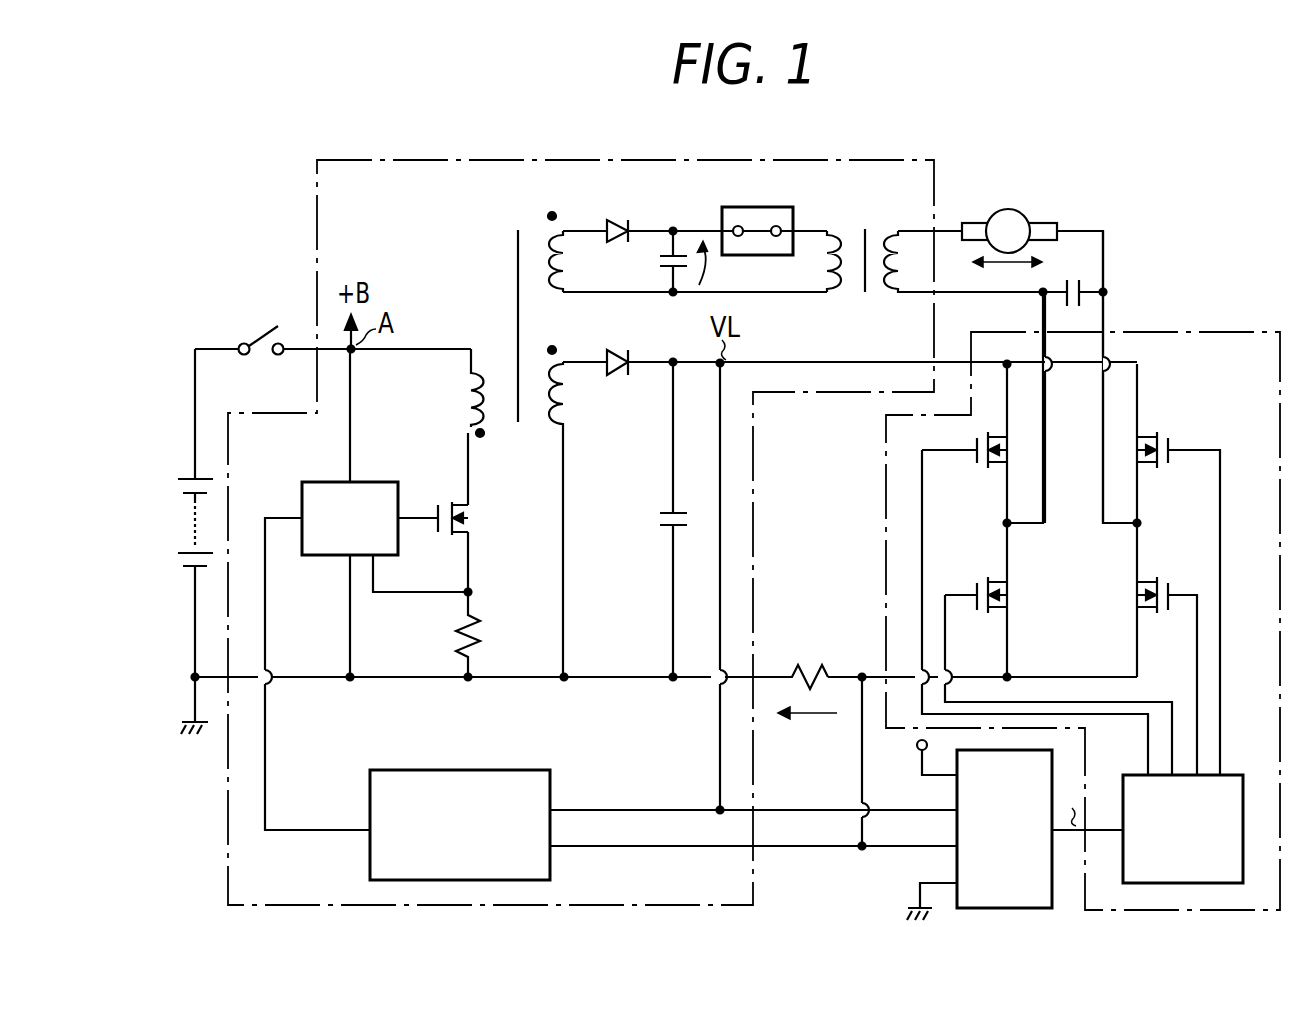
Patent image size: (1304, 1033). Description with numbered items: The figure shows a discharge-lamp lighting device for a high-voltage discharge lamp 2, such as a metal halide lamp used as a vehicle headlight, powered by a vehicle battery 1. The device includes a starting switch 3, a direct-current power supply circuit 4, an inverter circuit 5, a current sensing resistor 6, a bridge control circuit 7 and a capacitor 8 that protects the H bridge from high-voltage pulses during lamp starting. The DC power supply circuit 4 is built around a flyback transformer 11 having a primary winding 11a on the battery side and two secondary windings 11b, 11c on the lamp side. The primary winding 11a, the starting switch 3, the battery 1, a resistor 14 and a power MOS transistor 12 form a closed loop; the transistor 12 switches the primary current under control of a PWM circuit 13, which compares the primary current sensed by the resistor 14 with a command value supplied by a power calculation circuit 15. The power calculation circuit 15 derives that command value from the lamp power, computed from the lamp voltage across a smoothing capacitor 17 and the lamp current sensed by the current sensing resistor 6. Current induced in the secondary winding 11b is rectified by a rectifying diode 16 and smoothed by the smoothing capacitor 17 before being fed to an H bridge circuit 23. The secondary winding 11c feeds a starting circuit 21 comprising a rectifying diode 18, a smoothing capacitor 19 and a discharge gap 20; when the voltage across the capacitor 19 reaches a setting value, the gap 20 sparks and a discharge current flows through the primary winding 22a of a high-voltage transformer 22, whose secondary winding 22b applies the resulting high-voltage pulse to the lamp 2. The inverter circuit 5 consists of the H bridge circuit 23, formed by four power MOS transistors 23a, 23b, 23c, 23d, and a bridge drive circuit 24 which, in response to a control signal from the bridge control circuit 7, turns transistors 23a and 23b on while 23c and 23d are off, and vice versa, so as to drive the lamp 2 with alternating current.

The battery 1 is at (172, 518).
The discharge lamp 2 is at (1012, 212).
The starting switch 3 is at (262, 332).
The direct-current power supply circuit 4 is at (885, 156).
The inverter circuit 5 is at (1228, 333).
The current sensing resistor 6 is at (818, 662).
The bridge control circuit 7 is at (955, 790).
The capacitor 8 is at (1080, 276).
The flyback transformer 11 is at (513, 426).
The primary winding 11a is at (460, 385).
The secondary winding 11b is at (560, 387).
The secondary winding 11c is at (538, 229).
The power MOS transistor 12 is at (446, 499).
The PWM circuit 13 is at (372, 481).
The resistor 14 is at (495, 623).
The power calculation circuit 15 is at (518, 767).
The rectifying diode 16 is at (620, 348).
The smoothing capacitor 17 is at (696, 508).
The rectifying diode 18 is at (620, 216).
The smoothing capacitor 19 is at (688, 236).
The discharge gap 20 is at (778, 210).
The starting circuit 21 is at (692, 229).
The high-voltage transformer 22 is at (925, 230).
The primary winding 22a is at (838, 232).
The secondary winding 22b is at (904, 234).
The H bridge circuit 23 is at (1071, 503).
The power MOS transistor 23a is at (975, 472).
The power MOS transistor 23b is at (1165, 570).
The power MOS transistor 23c is at (1163, 427).
The power MOS transistor 23d is at (978, 572).
The bridge drive circuit 24 is at (1244, 772).